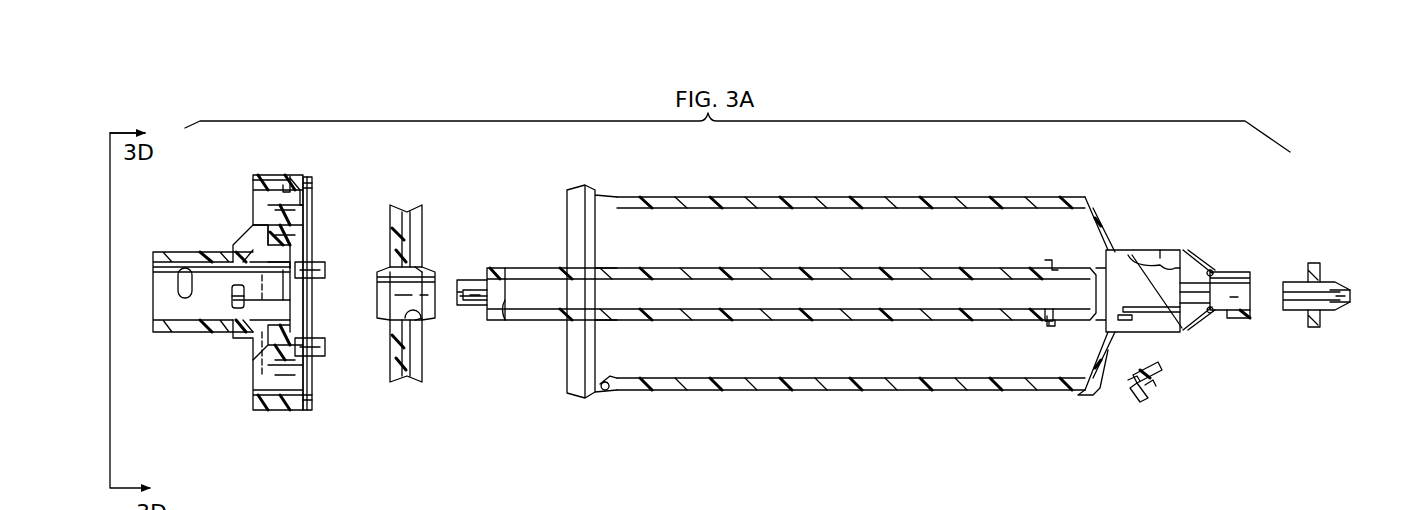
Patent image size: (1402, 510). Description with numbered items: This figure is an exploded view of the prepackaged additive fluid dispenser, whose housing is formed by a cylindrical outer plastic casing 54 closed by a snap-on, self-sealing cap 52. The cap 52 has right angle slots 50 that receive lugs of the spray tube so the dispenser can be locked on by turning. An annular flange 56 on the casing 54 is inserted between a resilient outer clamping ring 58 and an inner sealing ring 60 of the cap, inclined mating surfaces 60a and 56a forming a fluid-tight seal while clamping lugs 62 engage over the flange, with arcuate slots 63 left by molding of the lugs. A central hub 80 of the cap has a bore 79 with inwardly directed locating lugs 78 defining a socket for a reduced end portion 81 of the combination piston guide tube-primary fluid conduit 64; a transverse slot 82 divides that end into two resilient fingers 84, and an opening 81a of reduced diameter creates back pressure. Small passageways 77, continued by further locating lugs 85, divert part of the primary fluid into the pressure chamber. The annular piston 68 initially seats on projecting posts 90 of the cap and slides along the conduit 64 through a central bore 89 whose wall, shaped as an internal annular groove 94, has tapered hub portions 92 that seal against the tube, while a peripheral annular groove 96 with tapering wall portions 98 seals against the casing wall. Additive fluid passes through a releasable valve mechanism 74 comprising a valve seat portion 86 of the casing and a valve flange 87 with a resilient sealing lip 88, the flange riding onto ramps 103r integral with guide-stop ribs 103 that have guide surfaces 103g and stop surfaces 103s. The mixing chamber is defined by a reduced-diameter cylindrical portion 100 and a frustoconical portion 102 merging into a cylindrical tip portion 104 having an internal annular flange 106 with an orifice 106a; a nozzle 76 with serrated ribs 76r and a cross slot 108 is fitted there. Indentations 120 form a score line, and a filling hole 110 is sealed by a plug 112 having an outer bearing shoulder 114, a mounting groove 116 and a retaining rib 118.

The right angle slots 50 is at (165, 277).
The cap 52 is at (188, 390).
The outer casing 54 is at (868, 390).
The annular flange 56 is at (578, 398).
The mating surface 56a is at (608, 392).
The outer clamping ring 58 is at (272, 408).
The inner sealing ring 60 is at (258, 395).
The mating surface 60a is at (312, 402).
The clamping lugs 62 is at (308, 192).
The arcuate slots 63 is at (252, 192).
The combination piston guide tube-primary fluid conduit 64 is at (924, 322).
The piston 68 is at (397, 176).
The releasable valve mechanism 74 is at (1133, 180).
The nozzle 76 is at (1322, 313).
The serrated ribs 76r is at (1312, 265).
The passageways 77 is at (235, 265).
The locating lugs 78 is at (235, 300).
The bore 79 is at (210, 320).
The central hub 80 is at (263, 325).
The reduced end portion 81 is at (489, 277).
The opening 81a is at (502, 312).
The transverse slot 82 is at (478, 303).
The resilient fingers 84 is at (468, 288).
The locating lugs 85 is at (286, 265).
The valve seat portion 86 is at (1110, 255).
The valve flange 87 is at (1053, 325).
The sealing lip 88 is at (1045, 330).
The central bore 89 is at (378, 300).
The projecting posts 90 is at (318, 278).
The tapered hub portions 92 is at (425, 262).
The internal annular groove 94 is at (422, 318).
The annular groove 96 is at (410, 210).
The tapering wall portions 98 is at (404, 380).
The reduced-diameter cylindrical portion 100 is at (1150, 252).
The frustoconical portion 102 is at (1208, 270).
The guide-stop ribs 103 is at (1150, 250).
The guide surfaces 103g is at (1165, 257).
The stop surfaces 103s is at (1170, 252).
The ramps 103r is at (1152, 330).
The cylindrical tip portion 104 is at (1235, 275).
The internal annular flange 106 is at (1238, 318).
The orifice 106a is at (1246, 313).
The cross slot 108 is at (1348, 296).
The filling hole 110 is at (1105, 372).
The plug 112 is at (1162, 379).
The outer bearing shoulder 114 is at (1146, 396).
The mounting groove 116 is at (1138, 400).
The retaining rib 118 is at (1130, 392).
The indentations 120 is at (1215, 320).